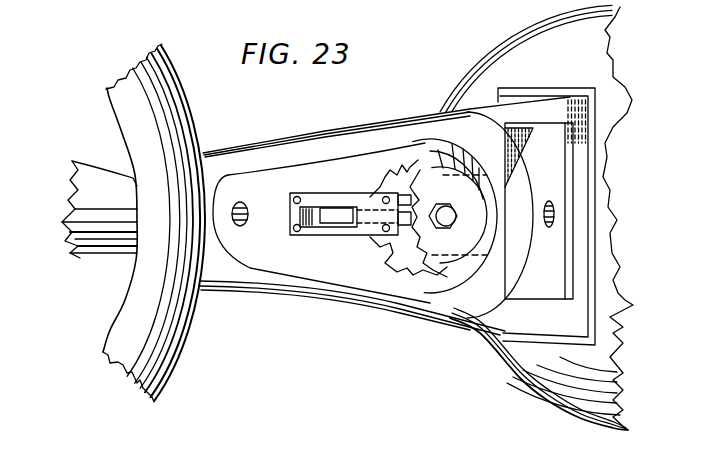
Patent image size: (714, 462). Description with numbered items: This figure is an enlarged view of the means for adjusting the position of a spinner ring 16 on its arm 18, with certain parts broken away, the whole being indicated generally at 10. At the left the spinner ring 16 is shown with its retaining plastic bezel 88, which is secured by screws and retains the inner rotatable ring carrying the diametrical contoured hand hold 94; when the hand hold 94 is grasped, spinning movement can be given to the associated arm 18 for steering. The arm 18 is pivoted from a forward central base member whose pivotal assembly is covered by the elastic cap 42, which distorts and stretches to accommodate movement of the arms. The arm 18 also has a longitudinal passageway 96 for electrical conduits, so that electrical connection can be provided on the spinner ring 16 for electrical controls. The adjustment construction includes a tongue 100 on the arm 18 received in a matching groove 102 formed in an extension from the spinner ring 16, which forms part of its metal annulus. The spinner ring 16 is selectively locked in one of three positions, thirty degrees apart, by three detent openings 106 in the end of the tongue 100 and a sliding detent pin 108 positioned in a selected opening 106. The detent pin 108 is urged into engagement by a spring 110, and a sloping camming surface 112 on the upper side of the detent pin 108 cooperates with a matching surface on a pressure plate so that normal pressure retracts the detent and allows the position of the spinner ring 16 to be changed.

The anti-skid apparatus 10 is at (429, 340).
The spinner ring 16 is at (173, 363).
The arm 18 is at (505, 321).
The elastic cap 42 is at (562, 83).
The retaining plastic bezel 88 is at (182, 135).
The hand hold 94 is at (125, 208).
The longitudinal passageway 96 is at (242, 208).
The tongue 100 is at (418, 172).
The groove 102 is at (389, 250).
The detent openings 106 is at (414, 188).
The detent pin 108 is at (407, 260).
The spring 110 is at (299, 229).
The camming surface 112 is at (323, 218).